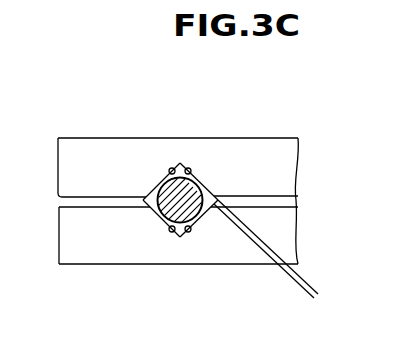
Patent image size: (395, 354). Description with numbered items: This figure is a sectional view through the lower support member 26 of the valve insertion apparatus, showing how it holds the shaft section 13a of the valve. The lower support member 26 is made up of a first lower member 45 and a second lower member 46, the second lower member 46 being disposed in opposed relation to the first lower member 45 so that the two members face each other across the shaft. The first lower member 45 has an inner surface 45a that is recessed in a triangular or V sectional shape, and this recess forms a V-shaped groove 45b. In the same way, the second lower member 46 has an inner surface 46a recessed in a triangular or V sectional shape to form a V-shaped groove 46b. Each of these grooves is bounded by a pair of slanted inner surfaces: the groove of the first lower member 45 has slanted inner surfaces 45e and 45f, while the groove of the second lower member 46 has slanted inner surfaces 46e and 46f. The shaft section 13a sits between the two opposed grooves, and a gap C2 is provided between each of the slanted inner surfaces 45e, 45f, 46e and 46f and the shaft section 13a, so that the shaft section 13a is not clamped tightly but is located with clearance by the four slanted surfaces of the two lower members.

The lower support member 26 is at (116, 131).
The first lower member 45 is at (145, 137).
The inner surface of first lower member 45a is at (60, 198).
The V-shaped groove of first lower member 45b is at (206, 178).
The slanted inner surface of first lower member 45e is at (174, 168).
The slanted inner surface of first lower member 45f is at (186, 167).
The second lower member 46 is at (102, 266).
The inner surface of second lower member 46a is at (296, 199).
The V-shaped groove of second lower member 46b is at (211, 215).
The slanted inner surface of second lower member 46e is at (174, 236).
The slanted inner surface of second lower member 46f is at (187, 233).
The shaft section 13a is at (168, 221).
The gap C2 is at (332, 281).